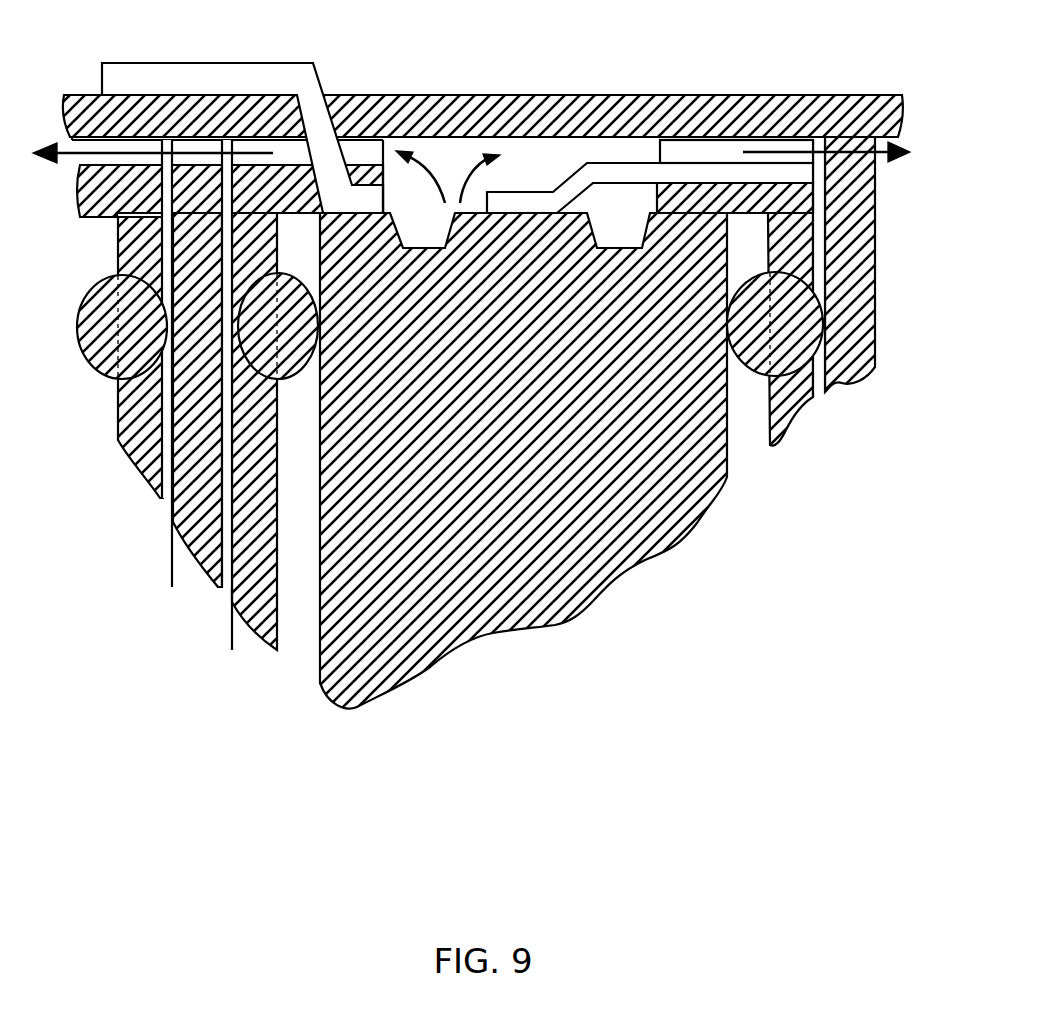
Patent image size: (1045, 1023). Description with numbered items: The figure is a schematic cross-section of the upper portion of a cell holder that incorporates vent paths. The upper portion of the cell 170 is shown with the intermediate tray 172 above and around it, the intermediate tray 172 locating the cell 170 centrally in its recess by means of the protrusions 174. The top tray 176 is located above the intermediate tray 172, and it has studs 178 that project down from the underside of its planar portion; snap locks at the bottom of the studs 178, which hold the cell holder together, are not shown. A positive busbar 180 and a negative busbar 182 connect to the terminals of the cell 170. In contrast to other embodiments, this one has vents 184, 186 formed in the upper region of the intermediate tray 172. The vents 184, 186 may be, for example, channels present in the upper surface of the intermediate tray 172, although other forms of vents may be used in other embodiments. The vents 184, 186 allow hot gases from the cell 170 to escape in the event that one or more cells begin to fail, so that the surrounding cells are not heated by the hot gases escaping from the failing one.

The cell 170 is at (320, 647).
The intermediate tray 172 is at (118, 418).
The protrusions 174 is at (760, 378).
The top tray 176 is at (708, 93).
The studs 178 is at (877, 255).
The positive busbar 180 is at (545, 192).
The negative busbar 182 is at (275, 62).
The vent 184 is at (660, 150).
The vent 186 is at (387, 155).